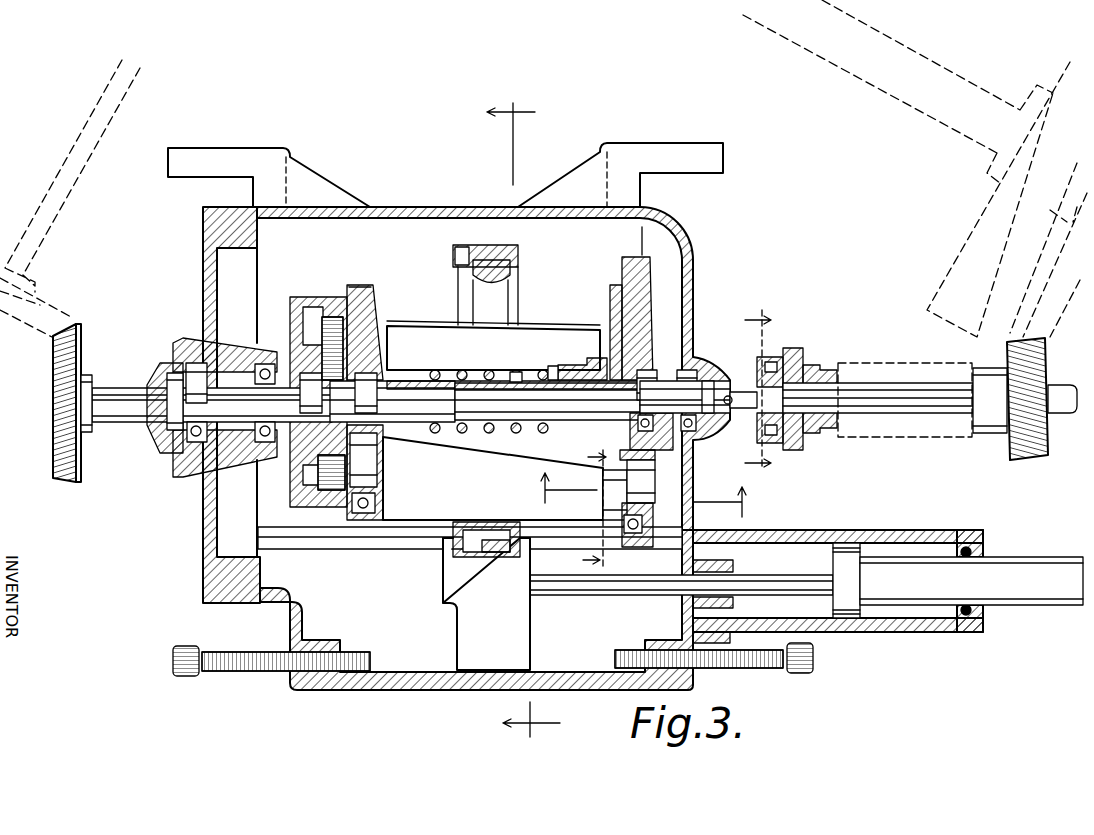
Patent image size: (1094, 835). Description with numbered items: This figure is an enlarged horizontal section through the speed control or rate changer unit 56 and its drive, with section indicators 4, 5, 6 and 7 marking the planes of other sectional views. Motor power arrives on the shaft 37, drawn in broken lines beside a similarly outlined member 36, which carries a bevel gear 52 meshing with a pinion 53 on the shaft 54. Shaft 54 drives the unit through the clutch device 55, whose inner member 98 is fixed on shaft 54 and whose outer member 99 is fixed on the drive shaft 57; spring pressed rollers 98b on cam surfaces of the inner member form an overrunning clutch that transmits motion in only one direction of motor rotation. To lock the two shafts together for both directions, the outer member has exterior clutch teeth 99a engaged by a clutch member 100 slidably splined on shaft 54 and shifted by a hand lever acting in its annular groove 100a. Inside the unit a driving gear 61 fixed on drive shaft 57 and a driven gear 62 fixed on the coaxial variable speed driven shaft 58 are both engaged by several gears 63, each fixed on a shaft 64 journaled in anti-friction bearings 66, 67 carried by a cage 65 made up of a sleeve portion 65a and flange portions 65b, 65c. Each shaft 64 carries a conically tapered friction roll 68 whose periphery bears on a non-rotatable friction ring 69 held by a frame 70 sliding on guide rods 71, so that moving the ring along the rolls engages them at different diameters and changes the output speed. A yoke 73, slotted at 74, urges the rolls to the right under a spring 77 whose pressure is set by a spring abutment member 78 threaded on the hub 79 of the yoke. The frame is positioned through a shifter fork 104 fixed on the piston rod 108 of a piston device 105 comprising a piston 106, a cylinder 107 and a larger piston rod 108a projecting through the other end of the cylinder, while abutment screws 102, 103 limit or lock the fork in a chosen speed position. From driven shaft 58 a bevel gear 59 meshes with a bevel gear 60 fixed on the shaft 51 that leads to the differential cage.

The arm 36 is at (978, 257).
The shaft 37 is at (940, 118).
The shaft 51 is at (55, 233).
The bevel gear 52 is at (1005, 328).
The pinion 53 is at (1030, 445).
The shaft 54 is at (937, 402).
The clutch device 55 is at (827, 320).
The speed control or rate changer unit 56 is at (697, 270).
The drive shaft 57 is at (402, 398).
The variable speed driven shaft 58 is at (222, 408).
The bevel gear 59 is at (68, 482).
The bevel gear 60 is at (62, 303).
The driving gear 61 is at (333, 350).
The driven gear 62 is at (325, 320).
The gear 63 is at (325, 485).
The shaft 64 is at (380, 478).
The cage 65 is at (383, 310).
The sleeve portion 65a is at (473, 397).
The flange portion 65b is at (370, 293).
The flange portion 65c is at (633, 272).
The anti-friction bearing 66 is at (363, 510).
The anti-friction bearing 67 is at (637, 520).
The conically tapered friction roll 68 is at (447, 335).
The non-rotatable friction ring 69 is at (490, 527).
The frame 70 is at (447, 573).
The guide rod 71 is at (330, 540).
The yoke 73 is at (612, 297).
The slot 74 is at (605, 473).
The spring 77 is at (517, 372).
The spring abutment member 78 is at (556, 368).
The hub 79 is at (593, 360).
The inner clutch member 98 is at (767, 443).
The spring pressed roller 98b is at (773, 423).
The outer clutch member 99 is at (755, 360).
The exterior clutch teeth 99a is at (773, 367).
The clutch member 100 is at (803, 352).
The annular groove 100a is at (818, 370).
The abutment screw 102 is at (355, 654).
The abutment screw 103 is at (617, 659).
The shifter fork member 104 is at (467, 637).
The piston device 105 is at (837, 531).
The piston 106 is at (852, 606).
The cylinder 107 is at (920, 622).
The piston rod 108 is at (577, 585).
The larger piston rod 108a is at (1019, 585).
The section line 4- 4 is at (523, 426).
The section line 5- 5 is at (642, 499).
The section line 6- 6 is at (585, 510).
The section line 7- 7 is at (751, 391).